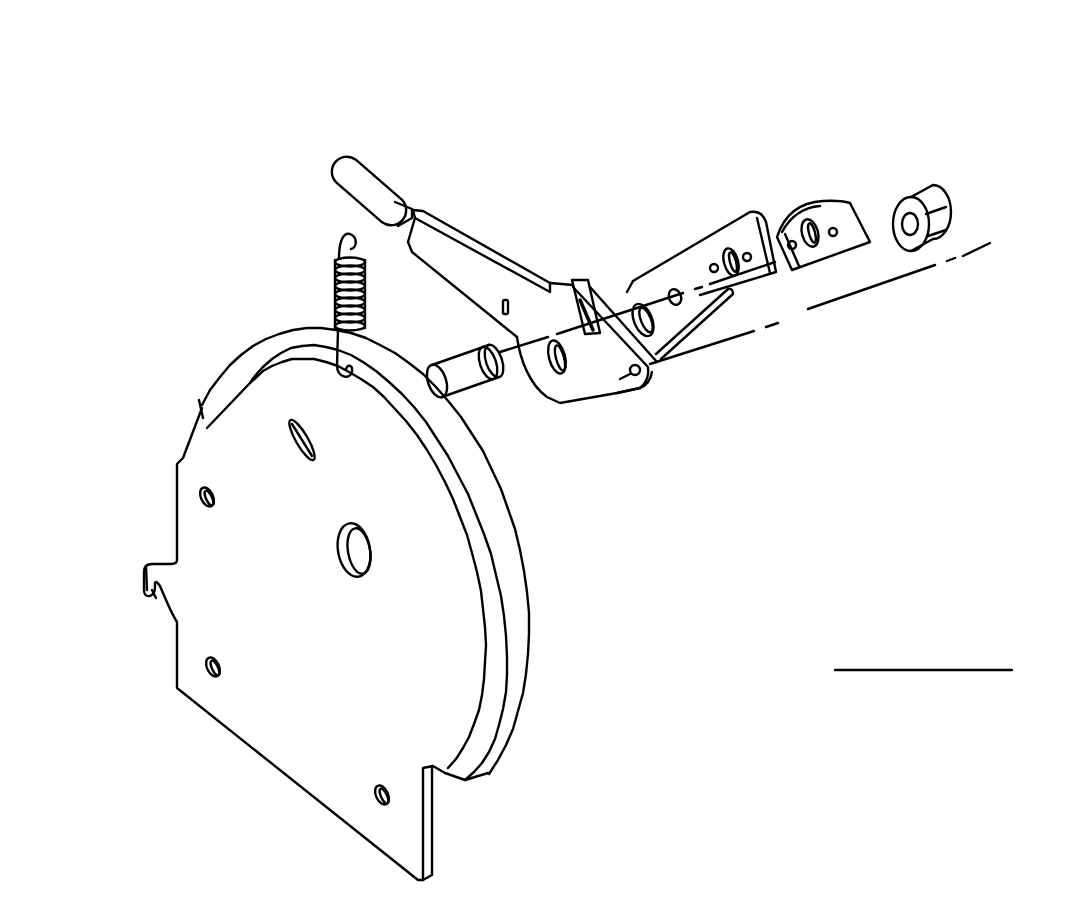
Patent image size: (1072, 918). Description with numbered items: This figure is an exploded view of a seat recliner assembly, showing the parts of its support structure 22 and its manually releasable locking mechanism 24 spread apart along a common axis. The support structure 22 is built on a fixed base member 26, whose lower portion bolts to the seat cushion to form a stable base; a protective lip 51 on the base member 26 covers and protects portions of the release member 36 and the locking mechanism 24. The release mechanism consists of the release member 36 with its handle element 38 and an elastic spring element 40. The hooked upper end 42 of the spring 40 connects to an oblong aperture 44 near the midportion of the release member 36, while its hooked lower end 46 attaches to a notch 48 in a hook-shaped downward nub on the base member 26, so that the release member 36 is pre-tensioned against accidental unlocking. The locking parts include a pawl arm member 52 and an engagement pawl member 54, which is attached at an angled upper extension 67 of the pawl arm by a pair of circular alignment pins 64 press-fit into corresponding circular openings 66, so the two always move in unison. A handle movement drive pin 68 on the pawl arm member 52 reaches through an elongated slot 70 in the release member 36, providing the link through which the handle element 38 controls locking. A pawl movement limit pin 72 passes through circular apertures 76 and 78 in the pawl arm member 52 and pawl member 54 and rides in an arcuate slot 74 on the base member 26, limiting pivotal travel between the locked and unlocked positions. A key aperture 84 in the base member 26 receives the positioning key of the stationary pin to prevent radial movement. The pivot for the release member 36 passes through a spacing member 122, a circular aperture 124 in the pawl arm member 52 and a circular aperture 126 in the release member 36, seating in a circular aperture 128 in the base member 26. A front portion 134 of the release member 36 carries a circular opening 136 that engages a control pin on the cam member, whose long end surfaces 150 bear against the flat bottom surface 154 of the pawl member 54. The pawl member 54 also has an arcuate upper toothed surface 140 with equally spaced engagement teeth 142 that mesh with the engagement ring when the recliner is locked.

The support structure 22 is at (163, 272).
The manually releasable locking mechanism 24 is at (674, 124).
The fixed base member 26 is at (174, 446).
The release member 36 is at (446, 246).
The handle element 38 is at (342, 154).
The elastic spring element 40 is at (333, 302).
The hooked upper end 42 is at (334, 226).
The oblong aperture 44 is at (505, 298).
The hooked lower end 46 is at (348, 376).
The notch 48 is at (150, 602).
The protective lip 51 is at (485, 713).
The pawl arm member 52 is at (688, 246).
The engagement pawl member 54 is at (788, 214).
The circular alignment pins 64 is at (818, 220).
The circular openings 66 is at (782, 298).
The angled upper extension 67 is at (732, 246).
The handle movement drive pin 68 is at (690, 335).
The elongated slot 70 is at (578, 300).
The pawl movement limit pin 72 is at (477, 380).
The arcuate slot 74 is at (304, 464).
The circular aperture 76 is at (750, 334).
The circular aperture 78 is at (838, 226).
The key aperture 84 is at (361, 567).
The spacing member 122 is at (990, 243).
The circular aperture 124 is at (633, 305).
The circular aperture 126 is at (560, 374).
The circular aperture 128 is at (197, 497).
The front portion 134 is at (620, 398).
The circular opening 136 is at (638, 376).
The arcuate upper toothed surface 140 is at (781, 232).
The engagement teeth 142 is at (864, 202).
The long end surfaces 150 is at (142, 566).
The flat bottom surface 154 is at (849, 300).